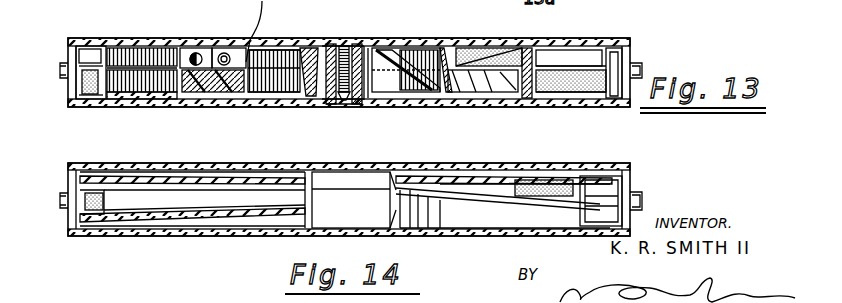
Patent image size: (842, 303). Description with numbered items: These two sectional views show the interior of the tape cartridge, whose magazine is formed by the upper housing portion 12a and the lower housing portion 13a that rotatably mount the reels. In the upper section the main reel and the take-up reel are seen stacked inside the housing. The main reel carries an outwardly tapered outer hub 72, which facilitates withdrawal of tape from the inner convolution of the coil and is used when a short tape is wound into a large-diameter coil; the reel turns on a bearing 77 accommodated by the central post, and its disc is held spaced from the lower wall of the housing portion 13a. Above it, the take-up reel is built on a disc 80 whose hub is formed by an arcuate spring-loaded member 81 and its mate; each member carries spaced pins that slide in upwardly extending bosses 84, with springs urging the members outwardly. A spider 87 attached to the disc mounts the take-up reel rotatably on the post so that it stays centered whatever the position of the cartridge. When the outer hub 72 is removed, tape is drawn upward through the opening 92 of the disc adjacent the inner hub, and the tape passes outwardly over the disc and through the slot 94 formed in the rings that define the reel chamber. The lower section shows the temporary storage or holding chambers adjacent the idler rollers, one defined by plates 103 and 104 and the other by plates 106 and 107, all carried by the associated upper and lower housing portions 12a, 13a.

In FIG. 13, the upper housing portion 12a is at (147, 40).
In FIG. 14, the upper housing portion 12a is at (252, 165).
In FIG. 13, the lower housing portion 13a is at (318, 104).
In FIG. 14, the lower housing portion 13a is at (178, 233).
In FIG. 13, the outer hub 72 is at (240, 66).
In FIG. 13, the bearing 77 is at (367, 100).
In FIG. 13, the disc 80 is at (576, 62).
In FIG. 13, the arcuate spring-loaded member 81 is at (272, 50).
In FIG. 13, the boss 84 is at (205, 50).
In FIG. 13, the spider 87 is at (426, 40).
In FIG. 13, the opening 92 is at (505, 45).
In FIG. 14, the slot 94 is at (600, 174).
In FIG. 14, the plate 103 is at (158, 177).
In FIG. 14, the plate 104 is at (597, 173).
In FIG. 14, the plate 106 is at (253, 220).
In FIG. 14, the plate 107 is at (475, 200).